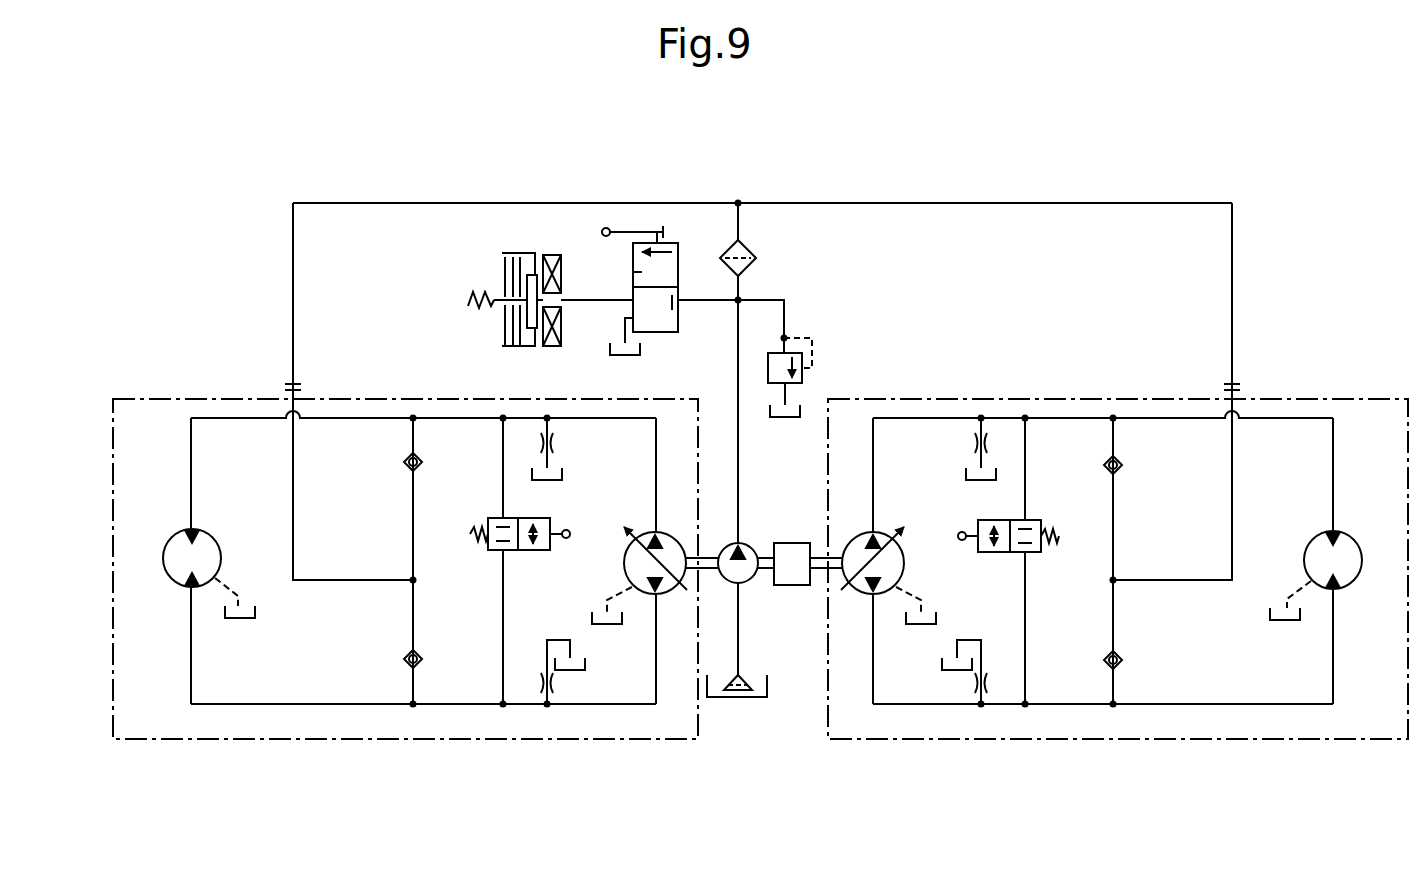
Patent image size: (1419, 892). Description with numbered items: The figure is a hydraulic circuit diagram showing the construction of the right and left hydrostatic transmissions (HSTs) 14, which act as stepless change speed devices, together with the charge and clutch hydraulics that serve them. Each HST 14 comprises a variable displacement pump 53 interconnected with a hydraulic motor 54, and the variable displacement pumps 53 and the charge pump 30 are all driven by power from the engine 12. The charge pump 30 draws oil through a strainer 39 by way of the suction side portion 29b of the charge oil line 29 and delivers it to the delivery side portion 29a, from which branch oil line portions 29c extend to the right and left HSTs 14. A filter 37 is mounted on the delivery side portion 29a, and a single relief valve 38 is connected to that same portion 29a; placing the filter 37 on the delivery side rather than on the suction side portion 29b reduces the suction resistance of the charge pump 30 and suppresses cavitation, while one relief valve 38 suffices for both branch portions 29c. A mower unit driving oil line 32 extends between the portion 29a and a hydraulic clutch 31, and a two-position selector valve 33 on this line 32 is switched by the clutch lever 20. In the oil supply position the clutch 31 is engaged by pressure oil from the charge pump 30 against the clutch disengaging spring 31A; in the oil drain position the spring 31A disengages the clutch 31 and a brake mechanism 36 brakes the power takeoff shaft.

The engine 12 is at (793, 543).
The hydrostatic transmission 14 is at (360, 398).
The clutch lever 20 is at (602, 231).
The charge oil line 29 is at (745, 232).
The delivery side portion of charge oil line 29a is at (742, 300).
The suction side portion of charge oil line 29b is at (740, 598).
The branch oil line portion 29c is at (290, 322).
The charge pump 30 is at (745, 541).
The hydraulic clutch 31 is at (498, 271).
The clutch disengaging spring 31A is at (478, 314).
The mower unit driving oil line 32 is at (591, 305).
The two-position selector valve 33 is at (680, 318).
The brake mechanism 36 is at (563, 277).
The filter 37 is at (730, 249).
The relief valve 38 is at (806, 372).
The strainer 39 is at (752, 697).
The variable displacement pump 53 is at (640, 530).
The hydraulic motor 54 is at (167, 545).